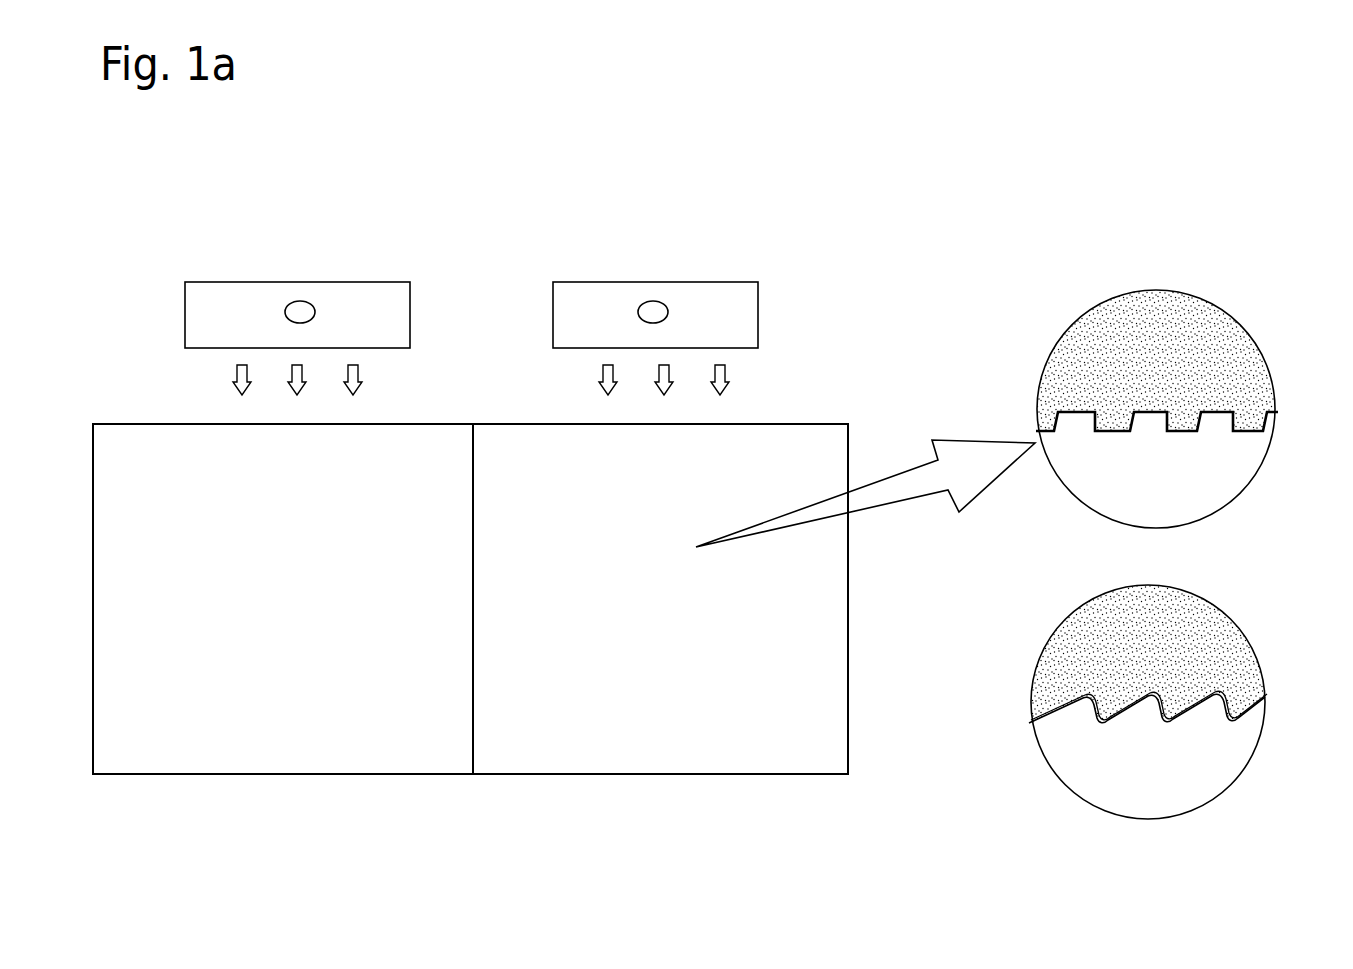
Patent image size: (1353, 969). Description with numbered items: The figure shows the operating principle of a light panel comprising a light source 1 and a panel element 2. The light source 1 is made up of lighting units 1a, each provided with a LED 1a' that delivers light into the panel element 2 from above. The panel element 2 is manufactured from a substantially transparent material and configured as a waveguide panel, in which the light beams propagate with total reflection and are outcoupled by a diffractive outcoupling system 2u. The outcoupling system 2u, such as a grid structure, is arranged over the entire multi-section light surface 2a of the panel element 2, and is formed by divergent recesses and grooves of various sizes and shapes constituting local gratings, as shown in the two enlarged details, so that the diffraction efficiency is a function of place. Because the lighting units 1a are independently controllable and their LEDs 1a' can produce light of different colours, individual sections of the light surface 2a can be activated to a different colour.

The light source 1 is at (778, 272).
The lighting unit 1a is at (471, 287).
The LED 1a' is at (476, 227).
The panel element 2 is at (714, 573).
The light surface 2a is at (592, 641).
The outcoupling system 2u is at (1221, 434).